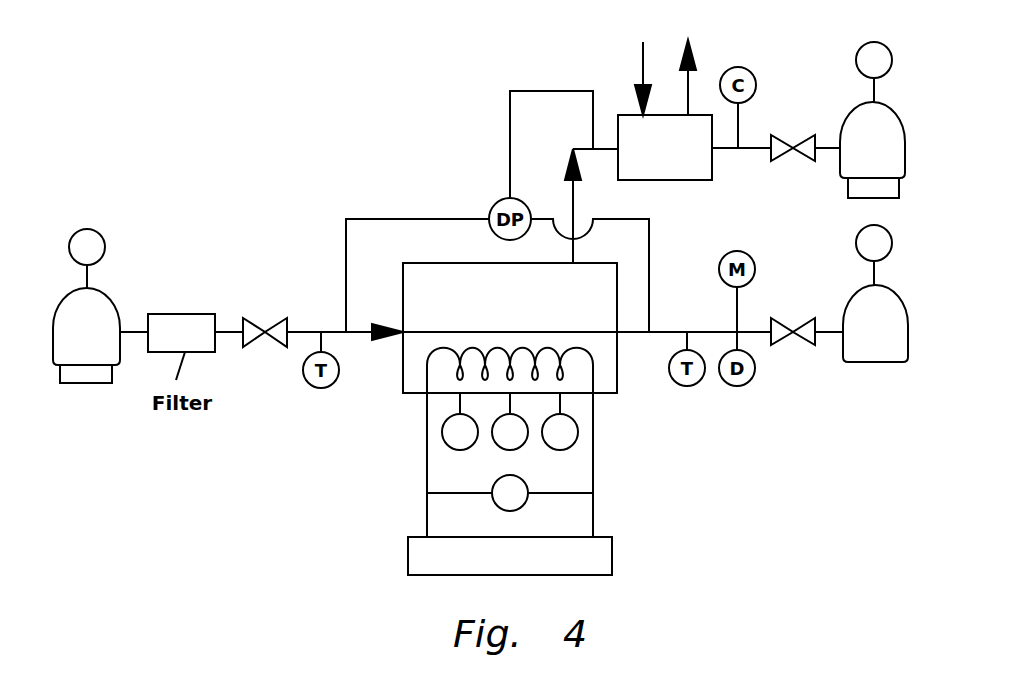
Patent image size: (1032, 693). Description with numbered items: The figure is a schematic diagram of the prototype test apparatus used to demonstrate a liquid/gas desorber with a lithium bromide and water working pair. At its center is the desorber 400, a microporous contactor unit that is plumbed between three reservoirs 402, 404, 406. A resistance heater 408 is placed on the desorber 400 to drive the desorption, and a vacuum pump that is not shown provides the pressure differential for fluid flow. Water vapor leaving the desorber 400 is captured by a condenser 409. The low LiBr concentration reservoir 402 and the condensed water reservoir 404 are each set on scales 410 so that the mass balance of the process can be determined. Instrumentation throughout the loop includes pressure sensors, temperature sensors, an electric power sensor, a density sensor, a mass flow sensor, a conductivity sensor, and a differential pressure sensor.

The desorber 400 is at (488, 307).
The low LiBr concentration reservoir 402 is at (62, 340).
The condensed water reservoir 404 is at (895, 154).
The reservoir 406 is at (852, 338).
The resistance heater 408 is at (637, 495).
The condenser 409 is at (643, 155).
The scales 410 is at (95, 383).